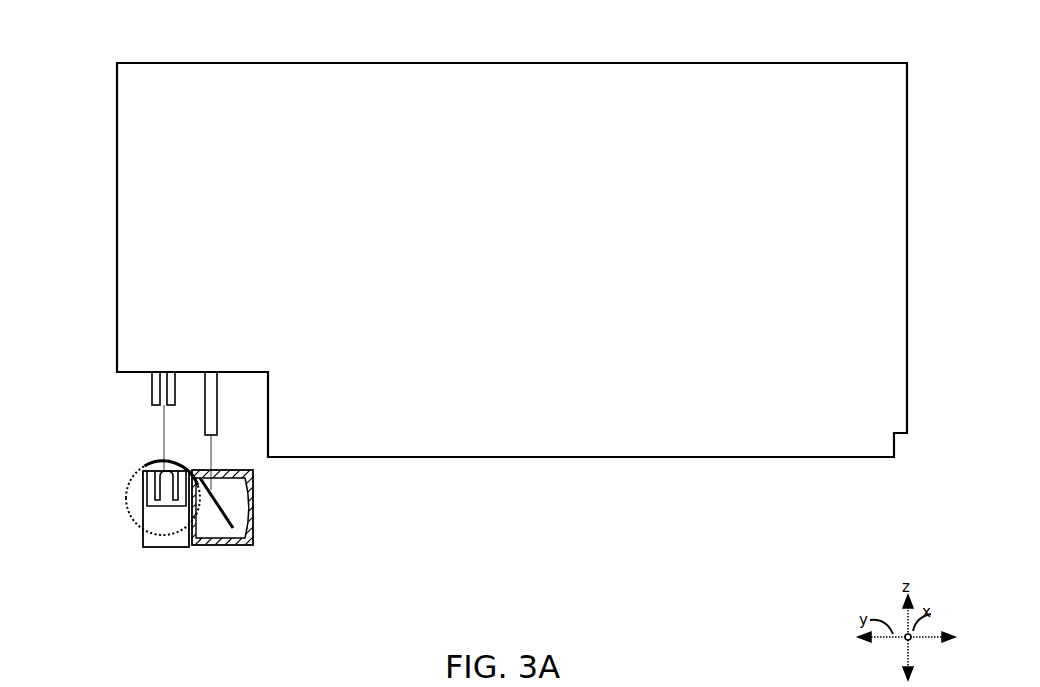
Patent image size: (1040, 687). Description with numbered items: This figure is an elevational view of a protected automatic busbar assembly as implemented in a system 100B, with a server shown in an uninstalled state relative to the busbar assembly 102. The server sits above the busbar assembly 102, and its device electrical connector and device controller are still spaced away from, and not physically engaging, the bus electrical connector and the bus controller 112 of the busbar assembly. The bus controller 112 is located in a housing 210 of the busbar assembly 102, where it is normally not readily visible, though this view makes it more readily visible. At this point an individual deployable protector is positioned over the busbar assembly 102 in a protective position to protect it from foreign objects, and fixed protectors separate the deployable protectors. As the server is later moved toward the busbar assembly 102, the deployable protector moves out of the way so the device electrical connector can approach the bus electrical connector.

The system 100B is at (728, 30).
The housing 210 is at (253, 483).
The bus controller 112 is at (227, 514).
The protected automatic busbar assembly 102 is at (273, 534).